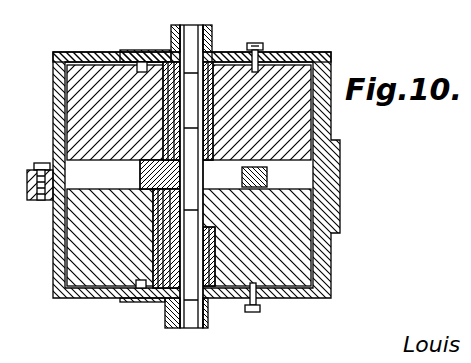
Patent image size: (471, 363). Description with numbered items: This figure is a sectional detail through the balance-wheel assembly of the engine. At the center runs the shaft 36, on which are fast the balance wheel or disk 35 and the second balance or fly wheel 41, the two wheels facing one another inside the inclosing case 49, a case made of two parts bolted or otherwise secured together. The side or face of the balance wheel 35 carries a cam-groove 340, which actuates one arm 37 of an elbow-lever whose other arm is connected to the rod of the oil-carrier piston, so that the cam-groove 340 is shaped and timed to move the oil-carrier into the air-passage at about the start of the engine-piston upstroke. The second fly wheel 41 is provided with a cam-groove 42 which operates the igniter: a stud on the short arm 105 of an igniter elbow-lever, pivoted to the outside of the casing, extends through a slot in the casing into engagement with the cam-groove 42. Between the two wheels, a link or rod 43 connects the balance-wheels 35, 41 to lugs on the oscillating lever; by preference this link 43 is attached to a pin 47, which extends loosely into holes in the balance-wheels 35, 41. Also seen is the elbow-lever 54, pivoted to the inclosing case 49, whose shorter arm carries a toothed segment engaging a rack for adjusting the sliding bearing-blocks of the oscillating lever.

The inclosing case 49 is at (53, 87).
The second balance or fly wheel 41 is at (296, 65).
The balance wheel or disk 35 is at (295, 260).
The elbow-lever 54 is at (268, 177).
The pin 47 is at (142, 174).
The link or rod 43 is at (179, 178).
The shaft 36 is at (190, 30).
The cam-groove 42 is at (140, 62).
The cam-groove 340 is at (140, 290).
The short arm 105 is at (290, 14).
The arm 37 is at (252, 312).